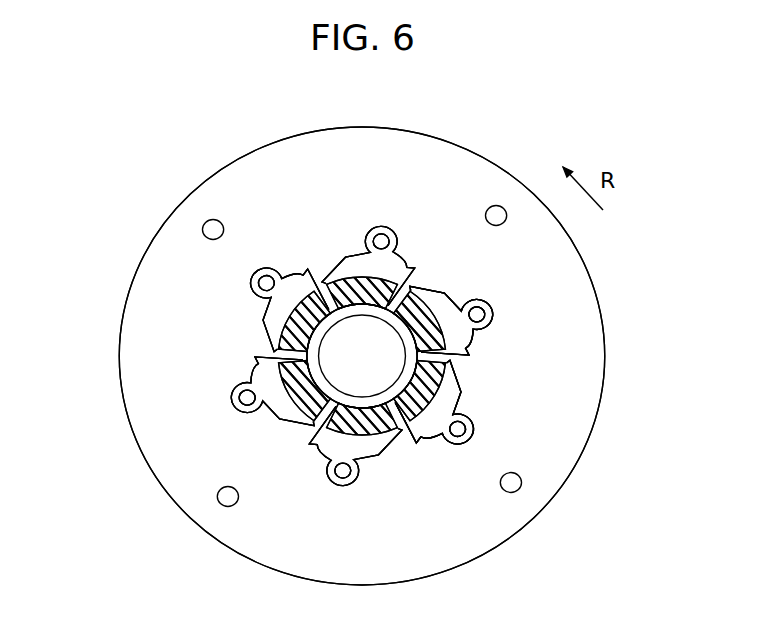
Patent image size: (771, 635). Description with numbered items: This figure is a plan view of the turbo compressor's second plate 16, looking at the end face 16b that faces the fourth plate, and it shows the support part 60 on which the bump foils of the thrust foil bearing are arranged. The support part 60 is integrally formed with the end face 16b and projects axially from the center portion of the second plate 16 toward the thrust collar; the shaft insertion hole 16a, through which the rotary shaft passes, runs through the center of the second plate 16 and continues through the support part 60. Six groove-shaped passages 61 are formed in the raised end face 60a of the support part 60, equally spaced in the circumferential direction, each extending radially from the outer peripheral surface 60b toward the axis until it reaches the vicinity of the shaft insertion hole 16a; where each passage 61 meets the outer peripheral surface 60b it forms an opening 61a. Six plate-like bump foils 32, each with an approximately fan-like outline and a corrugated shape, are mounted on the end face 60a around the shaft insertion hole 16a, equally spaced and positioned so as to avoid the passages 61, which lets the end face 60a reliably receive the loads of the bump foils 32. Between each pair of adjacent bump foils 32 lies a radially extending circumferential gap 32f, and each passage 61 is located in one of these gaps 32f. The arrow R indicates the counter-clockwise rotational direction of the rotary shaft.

The second plate 16 is at (518, 170).
The shaft insertion hole 16a is at (373, 315).
The end face 16b is at (572, 416).
The bump foil 32 is at (345, 285).
The circumferential gap 32f is at (333, 406).
The support part 60 is at (348, 245).
The end face 60a is at (410, 287).
The outer peripheral surface 60b is at (470, 348).
The passage 61 is at (362, 355).
The opening 61a is at (317, 287).